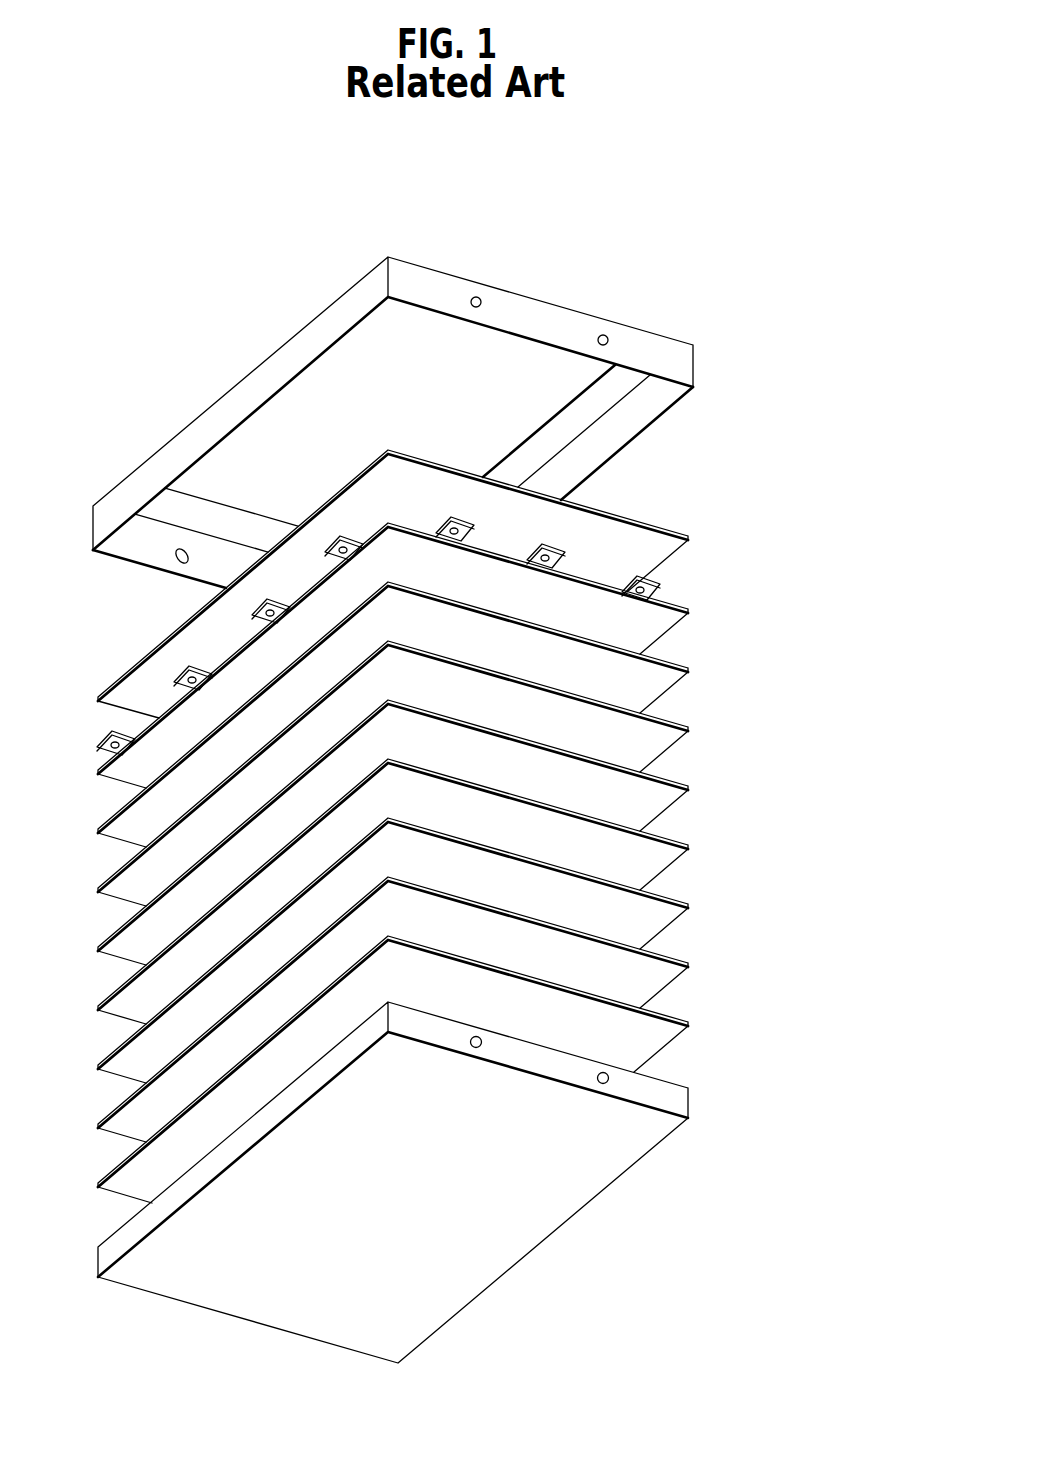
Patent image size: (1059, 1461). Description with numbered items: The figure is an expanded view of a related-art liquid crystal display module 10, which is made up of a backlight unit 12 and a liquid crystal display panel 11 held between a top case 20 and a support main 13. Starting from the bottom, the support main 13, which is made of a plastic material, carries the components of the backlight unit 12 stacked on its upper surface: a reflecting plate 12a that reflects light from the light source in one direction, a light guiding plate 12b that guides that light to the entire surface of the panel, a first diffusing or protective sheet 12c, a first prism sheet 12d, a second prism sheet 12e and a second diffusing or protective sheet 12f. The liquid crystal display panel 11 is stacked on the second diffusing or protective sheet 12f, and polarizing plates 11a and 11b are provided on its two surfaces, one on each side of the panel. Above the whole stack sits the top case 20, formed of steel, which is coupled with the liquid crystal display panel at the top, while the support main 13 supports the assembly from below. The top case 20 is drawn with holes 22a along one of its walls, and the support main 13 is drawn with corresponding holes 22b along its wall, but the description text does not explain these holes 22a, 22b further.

The liquid crystal display module 10 is at (668, 198).
The top case 20 is at (420, 411).
The fastening holes of top case 22a is at (603, 335).
The polarizing plate 11a is at (655, 526).
The liquid crystal display panel 11 is at (665, 602).
The polarizing plate 11b is at (665, 661).
The backlight unit 12 is at (469, 922).
The second diffusing or protective sheet 12f is at (665, 720).
The second prism sheet 12e is at (665, 779).
The first prism sheet 12d is at (665, 838).
The first diffusing or protective sheet 12c is at (665, 897).
The light guiding plate 12b is at (665, 956).
The reflecting plate 12a is at (427, 1069).
The support main 13 is at (423, 1182).
The fastening holes of bottom cover 22b is at (477, 1047).